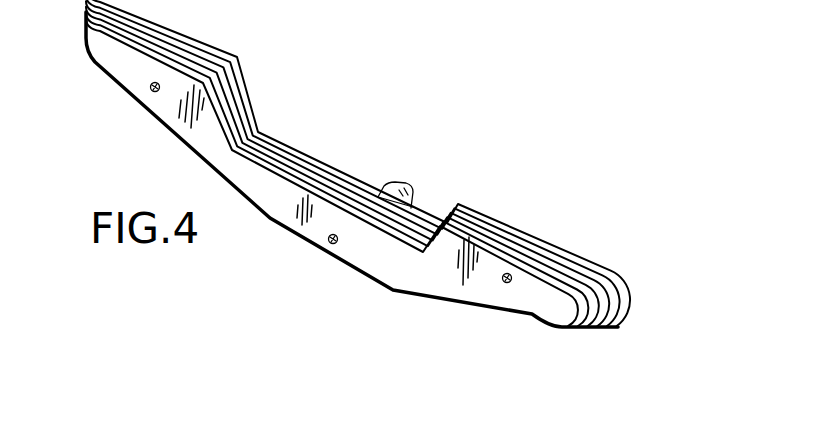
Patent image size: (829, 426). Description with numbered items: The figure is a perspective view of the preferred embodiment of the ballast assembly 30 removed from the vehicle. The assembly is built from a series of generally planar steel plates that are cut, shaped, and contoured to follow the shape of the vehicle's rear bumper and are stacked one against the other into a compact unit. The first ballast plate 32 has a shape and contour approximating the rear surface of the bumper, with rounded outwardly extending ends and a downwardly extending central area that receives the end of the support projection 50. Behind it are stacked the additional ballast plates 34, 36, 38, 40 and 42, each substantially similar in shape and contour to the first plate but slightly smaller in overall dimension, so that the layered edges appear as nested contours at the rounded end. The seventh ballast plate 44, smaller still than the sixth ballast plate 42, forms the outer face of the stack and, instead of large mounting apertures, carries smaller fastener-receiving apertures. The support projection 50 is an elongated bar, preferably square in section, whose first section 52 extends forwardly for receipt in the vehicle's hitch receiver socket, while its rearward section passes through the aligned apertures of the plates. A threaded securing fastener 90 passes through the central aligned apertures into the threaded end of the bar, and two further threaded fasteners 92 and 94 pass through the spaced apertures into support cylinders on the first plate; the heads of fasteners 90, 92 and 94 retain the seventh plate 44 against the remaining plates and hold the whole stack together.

The ballast assembly 30 is at (519, 158).
The first ballast plate 32 is at (626, 280).
The ballast plate 34 is at (636, 297).
The ballast plate 36 is at (627, 323).
The ballast plate 38 is at (610, 328).
The ballast plate 40 is at (590, 328).
The sixth ballast plate 42 is at (577, 327).
The seventh ballast plate 44 is at (545, 303).
The support projection 50 is at (382, 181).
The first section 52 is at (402, 186).
The securing fastener 90 is at (328, 243).
The threaded fastener 92 is at (150, 90).
The fastener 94 is at (503, 283).